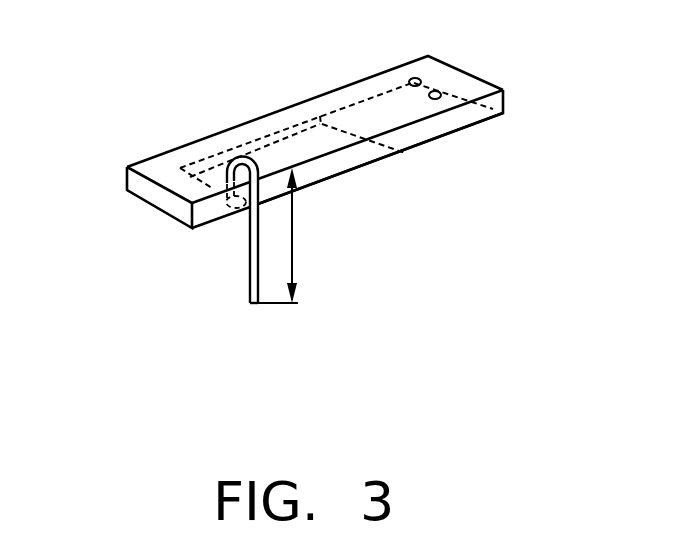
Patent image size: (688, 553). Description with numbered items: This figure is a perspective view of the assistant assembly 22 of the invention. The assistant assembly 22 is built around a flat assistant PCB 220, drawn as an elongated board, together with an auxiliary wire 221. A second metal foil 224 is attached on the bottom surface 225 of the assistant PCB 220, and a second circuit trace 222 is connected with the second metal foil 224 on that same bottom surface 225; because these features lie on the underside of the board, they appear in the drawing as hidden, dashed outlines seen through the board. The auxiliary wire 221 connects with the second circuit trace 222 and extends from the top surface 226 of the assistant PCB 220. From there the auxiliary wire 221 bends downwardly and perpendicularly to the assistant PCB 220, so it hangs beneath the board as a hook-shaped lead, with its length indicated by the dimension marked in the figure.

The assistant assembly 22 is at (233, 110).
The assistant PCB 220 is at (165, 160).
The auxiliary wire 221 is at (250, 266).
The second circuit trace 222 is at (290, 141).
The second metal foil 224 is at (383, 108).
The bottom surface 225 is at (459, 136).
The top surface 226 is at (440, 68).